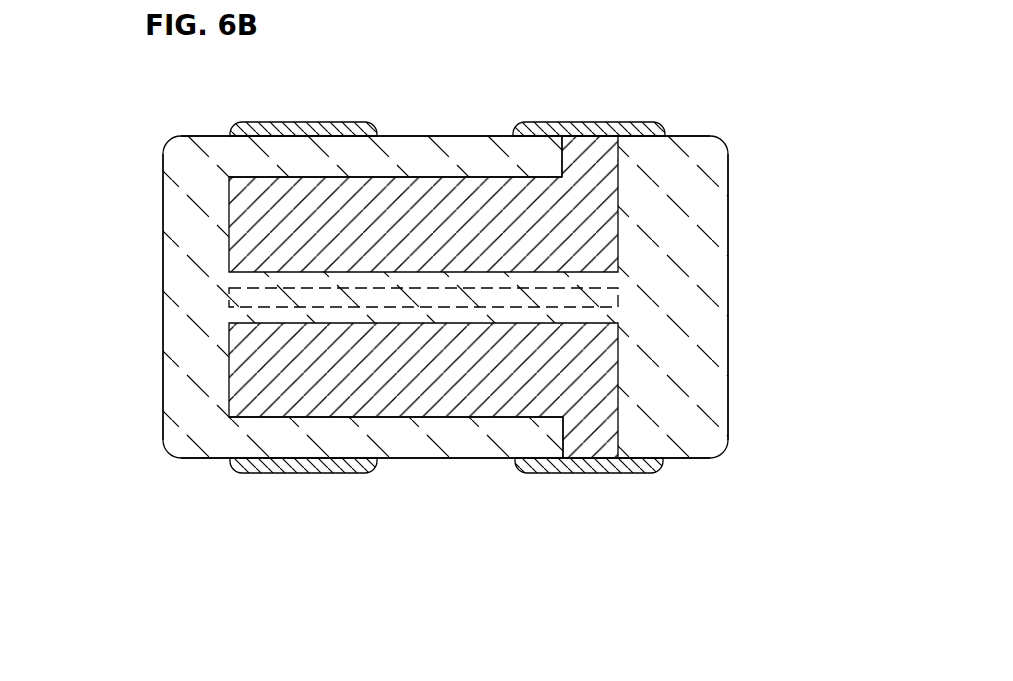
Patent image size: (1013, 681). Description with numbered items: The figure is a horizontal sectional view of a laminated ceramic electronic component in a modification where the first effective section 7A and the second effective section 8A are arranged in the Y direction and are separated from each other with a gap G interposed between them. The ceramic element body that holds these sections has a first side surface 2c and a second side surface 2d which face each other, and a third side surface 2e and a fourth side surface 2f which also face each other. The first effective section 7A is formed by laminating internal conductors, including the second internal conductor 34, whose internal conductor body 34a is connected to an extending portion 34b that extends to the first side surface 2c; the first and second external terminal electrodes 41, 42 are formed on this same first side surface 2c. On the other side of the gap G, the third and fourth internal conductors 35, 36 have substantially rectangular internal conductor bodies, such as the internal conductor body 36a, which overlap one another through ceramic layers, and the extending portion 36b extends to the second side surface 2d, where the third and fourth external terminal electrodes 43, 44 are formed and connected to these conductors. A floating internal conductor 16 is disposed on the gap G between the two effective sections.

The first side surface 2c is at (423, 136).
The second side surface 2d is at (420, 458).
The third side surface 2e is at (162, 212).
The fourth side surface 2f is at (728, 283).
The first effective section 7A is at (618, 215).
The second effective section 8A is at (618, 371).
The floating internal conductor 16 is at (229, 296).
The gap G is at (643, 271).
The second internal conductor 34 is at (655, 0).
The internal conductor body 34a is at (483, 177).
The extending portion 34b is at (562, 158).
The third internal conductor 35 is at (482, 0).
The fourth internal conductor 36 is at (527, 598).
The internal conductor body 36a is at (475, 418).
The extending portion 36b is at (562, 438).
The first external terminal electrode 41 is at (315, 121).
The second external terminal electrode 42 is at (612, 121).
The third external terminal electrode 43 is at (293, 473).
The fourth external terminal electrode 44 is at (602, 473).